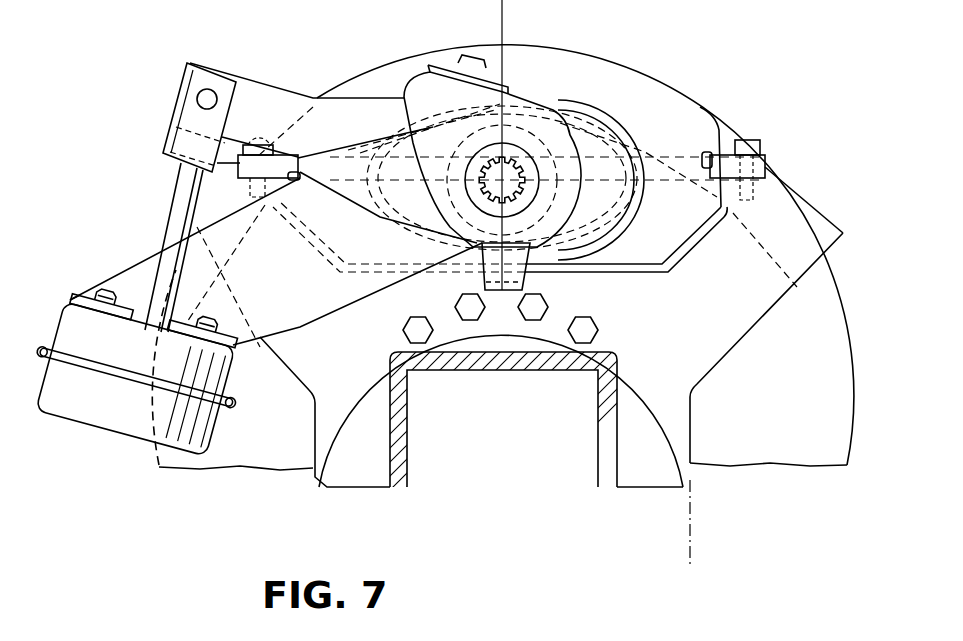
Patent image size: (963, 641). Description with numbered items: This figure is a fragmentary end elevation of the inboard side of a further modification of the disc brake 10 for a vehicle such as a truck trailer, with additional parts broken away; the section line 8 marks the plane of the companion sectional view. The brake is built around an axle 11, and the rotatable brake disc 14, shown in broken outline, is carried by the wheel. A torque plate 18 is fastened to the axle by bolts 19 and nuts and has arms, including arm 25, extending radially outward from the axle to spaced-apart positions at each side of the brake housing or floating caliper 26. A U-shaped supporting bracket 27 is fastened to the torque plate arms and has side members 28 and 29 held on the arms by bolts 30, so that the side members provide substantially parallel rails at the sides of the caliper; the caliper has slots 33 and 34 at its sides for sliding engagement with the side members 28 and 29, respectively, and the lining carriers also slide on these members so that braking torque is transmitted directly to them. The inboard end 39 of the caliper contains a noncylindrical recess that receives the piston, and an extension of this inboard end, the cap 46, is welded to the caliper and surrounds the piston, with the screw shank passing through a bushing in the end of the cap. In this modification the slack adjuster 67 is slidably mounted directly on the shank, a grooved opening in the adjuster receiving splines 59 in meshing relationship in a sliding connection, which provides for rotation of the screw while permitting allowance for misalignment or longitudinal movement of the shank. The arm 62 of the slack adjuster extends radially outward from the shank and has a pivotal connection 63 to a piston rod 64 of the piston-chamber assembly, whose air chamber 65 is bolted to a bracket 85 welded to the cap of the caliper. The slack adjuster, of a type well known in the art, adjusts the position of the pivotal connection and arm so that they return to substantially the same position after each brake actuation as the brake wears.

The section line 8- 8 is at (480, 13).
The disc brake 10 is at (664, 60).
The axle 11 is at (600, 407).
The brake disc 14 is at (812, 352).
The torque plate 18 is at (684, 416).
The bolts 19 is at (533, 320).
The arm 25 is at (808, 207).
The caliper 26 is at (684, 111).
The supporting bracket 27 is at (247, 180).
The side member 28 is at (283, 163).
The side member 29 is at (735, 167).
The bolts 30 is at (257, 143).
The slot 33 is at (302, 179).
The slot 34 is at (703, 155).
The inboard end 39 is at (670, 250).
The cap 46 is at (572, 122).
The splines 59 is at (507, 193).
The arm 62 is at (343, 110).
The pivotal connection 63 is at (197, 99).
The piston rod 64 is at (182, 192).
The air chamber 65 is at (120, 417).
The slack adjuster 67 is at (428, 88).
The bracket 85 is at (140, 286).